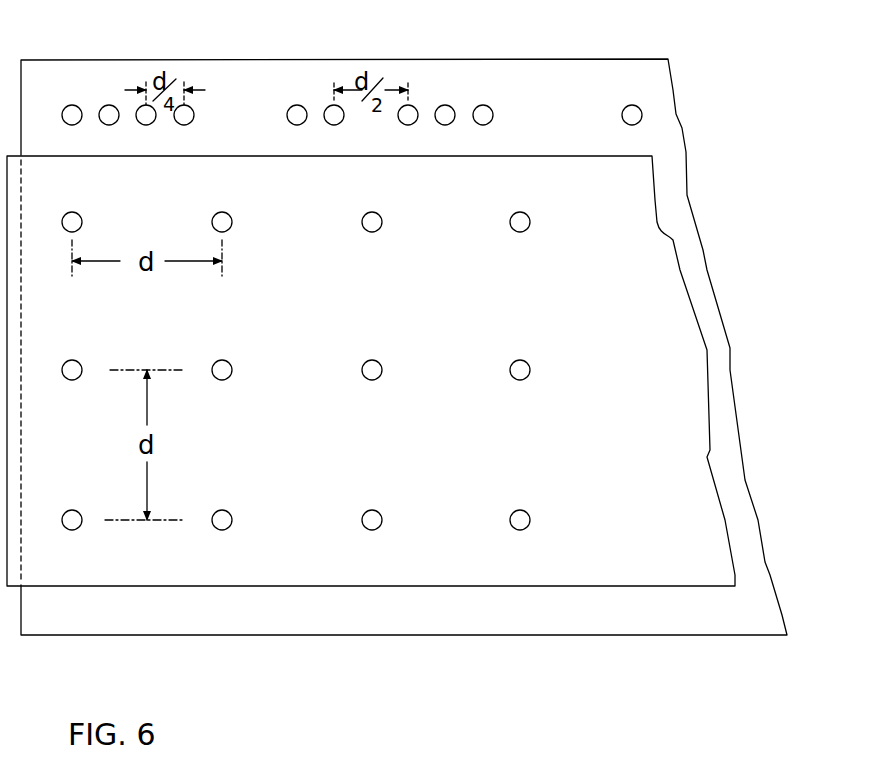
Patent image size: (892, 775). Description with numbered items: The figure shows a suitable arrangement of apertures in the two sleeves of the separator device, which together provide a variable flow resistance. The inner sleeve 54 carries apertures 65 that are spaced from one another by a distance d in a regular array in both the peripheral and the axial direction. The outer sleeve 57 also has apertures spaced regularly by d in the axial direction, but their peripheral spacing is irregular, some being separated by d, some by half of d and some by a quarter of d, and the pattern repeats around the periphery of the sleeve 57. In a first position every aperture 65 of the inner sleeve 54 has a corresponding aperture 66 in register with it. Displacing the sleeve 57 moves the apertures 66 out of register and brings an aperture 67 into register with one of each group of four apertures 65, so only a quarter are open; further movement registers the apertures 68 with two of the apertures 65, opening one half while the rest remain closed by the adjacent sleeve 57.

The inner sleeve 54 is at (536, 573).
The outer sleeve 57 is at (722, 618).
The apertures 65 is at (65, 225).
The aperture 66 is at (70, 112).
The aperture 67 is at (108, 113).
The apertures 68 is at (294, 113).